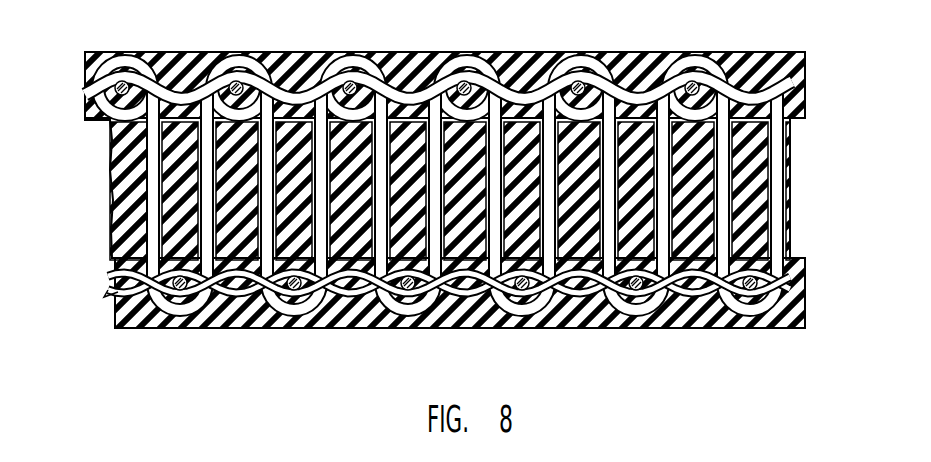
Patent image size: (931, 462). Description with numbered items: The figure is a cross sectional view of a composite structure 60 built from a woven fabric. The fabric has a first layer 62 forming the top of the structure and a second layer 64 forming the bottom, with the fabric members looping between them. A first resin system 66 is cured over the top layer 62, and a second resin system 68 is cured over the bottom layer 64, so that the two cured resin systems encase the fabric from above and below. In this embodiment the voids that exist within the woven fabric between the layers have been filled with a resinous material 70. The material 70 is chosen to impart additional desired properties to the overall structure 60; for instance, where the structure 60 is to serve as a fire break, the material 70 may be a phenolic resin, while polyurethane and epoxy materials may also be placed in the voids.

The structure 60 is at (556, 48).
The first layer 62 is at (88, 96).
The second layer 64 is at (106, 296).
The first resin system 66 is at (797, 98).
The second resin system 68 is at (804, 283).
The resinous material 70 is at (363, 120).